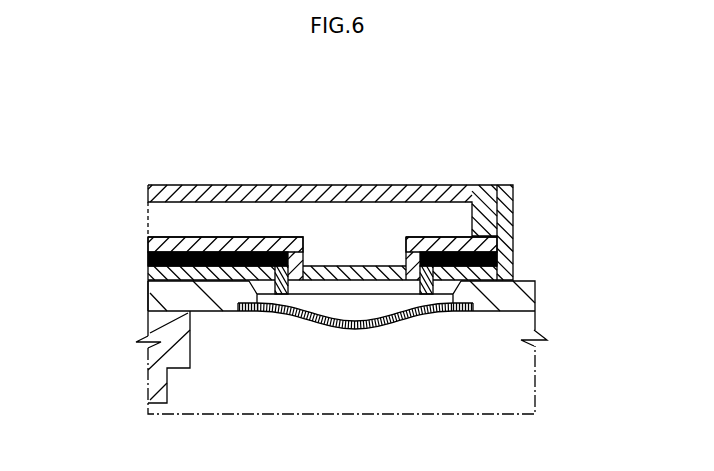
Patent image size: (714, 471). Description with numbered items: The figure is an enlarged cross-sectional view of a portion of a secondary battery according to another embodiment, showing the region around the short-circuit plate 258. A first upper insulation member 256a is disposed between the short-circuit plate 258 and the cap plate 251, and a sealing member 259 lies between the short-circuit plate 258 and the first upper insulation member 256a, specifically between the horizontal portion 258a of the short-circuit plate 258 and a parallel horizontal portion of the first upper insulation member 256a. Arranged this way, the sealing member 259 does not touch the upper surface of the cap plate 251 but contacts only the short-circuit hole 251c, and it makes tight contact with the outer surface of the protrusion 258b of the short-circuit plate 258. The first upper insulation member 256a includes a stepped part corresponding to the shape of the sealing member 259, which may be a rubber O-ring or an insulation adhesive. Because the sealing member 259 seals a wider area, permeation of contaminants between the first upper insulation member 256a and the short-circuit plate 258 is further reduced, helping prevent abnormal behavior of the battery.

The cap plate 251 is at (158, 293).
The short-circuit hole 251c is at (445, 293).
The first upper insulation member 256a is at (513, 205).
The short-circuit plate 258 is at (183, 238).
The horizontal portion of the short-circuit plate 258a is at (163, 245).
The protrusion of the short-circuit plate 258b is at (289, 290).
The sealing member 259 is at (148, 260).